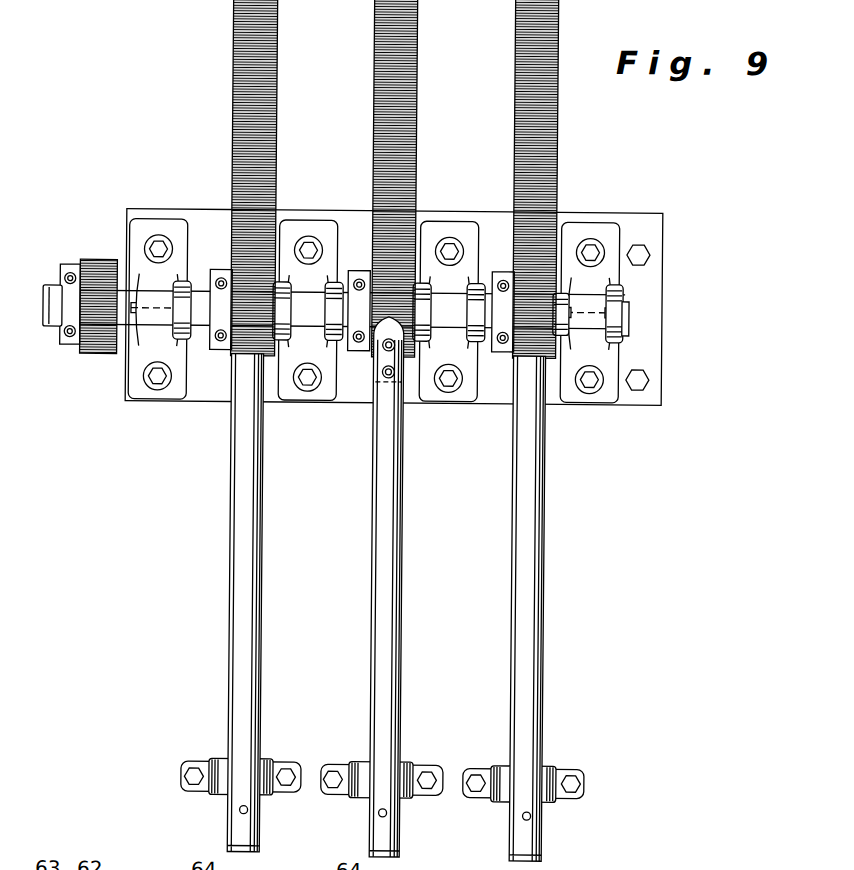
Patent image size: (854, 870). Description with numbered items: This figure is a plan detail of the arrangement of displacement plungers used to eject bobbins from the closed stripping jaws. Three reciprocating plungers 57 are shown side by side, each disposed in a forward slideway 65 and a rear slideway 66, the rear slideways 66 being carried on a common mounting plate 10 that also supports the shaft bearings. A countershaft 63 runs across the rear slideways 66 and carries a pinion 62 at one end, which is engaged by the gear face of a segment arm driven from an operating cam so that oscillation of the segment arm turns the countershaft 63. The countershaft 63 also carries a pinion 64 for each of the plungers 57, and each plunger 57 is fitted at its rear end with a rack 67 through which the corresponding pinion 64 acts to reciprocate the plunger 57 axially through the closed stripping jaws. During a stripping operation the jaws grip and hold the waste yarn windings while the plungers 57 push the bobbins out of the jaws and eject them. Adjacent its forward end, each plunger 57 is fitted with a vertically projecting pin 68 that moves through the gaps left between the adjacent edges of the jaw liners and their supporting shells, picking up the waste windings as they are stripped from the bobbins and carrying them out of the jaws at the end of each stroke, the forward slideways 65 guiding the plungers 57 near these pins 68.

The mounting plate 10 is at (672, 218).
The reciprocating plunger 57 is at (253, 553).
The pinion 62 is at (93, 358).
The countershaft 63 is at (46, 288).
The pinion 64 is at (233, 355).
The forward slideway 65 is at (270, 763).
The rear slideway 66 is at (281, 218).
The rack 67 is at (277, 47).
The vertically projecting pin 68 is at (252, 811).